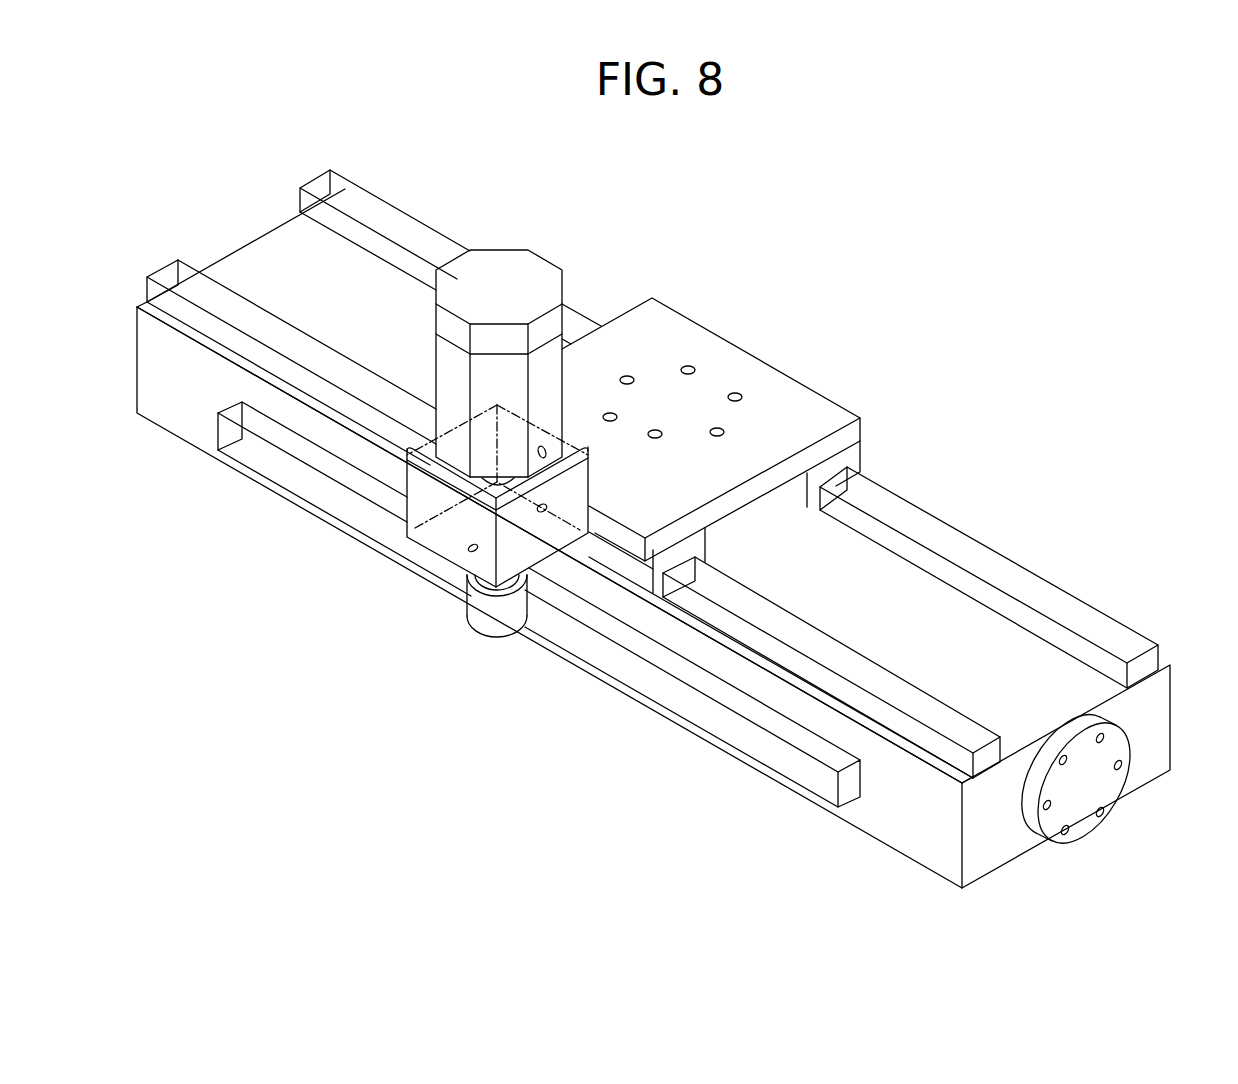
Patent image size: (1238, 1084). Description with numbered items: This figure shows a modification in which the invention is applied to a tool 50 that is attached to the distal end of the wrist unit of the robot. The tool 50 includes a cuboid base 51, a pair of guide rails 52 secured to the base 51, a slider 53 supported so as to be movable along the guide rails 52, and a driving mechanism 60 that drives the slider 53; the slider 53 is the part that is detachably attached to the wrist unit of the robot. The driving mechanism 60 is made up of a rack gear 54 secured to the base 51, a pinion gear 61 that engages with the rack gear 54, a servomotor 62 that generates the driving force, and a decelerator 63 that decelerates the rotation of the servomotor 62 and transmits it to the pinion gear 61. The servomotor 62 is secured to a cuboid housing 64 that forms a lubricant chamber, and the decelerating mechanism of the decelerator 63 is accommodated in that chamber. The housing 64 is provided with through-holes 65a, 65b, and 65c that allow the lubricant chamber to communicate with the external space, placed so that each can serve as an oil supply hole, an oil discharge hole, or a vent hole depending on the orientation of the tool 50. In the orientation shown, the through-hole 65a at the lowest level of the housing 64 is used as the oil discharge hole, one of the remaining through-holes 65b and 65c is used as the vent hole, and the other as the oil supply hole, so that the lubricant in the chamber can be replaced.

The tool 50 is at (1000, 393).
The base 51 is at (1000, 873).
The guide rails 52 is at (905, 700).
The slider 53 is at (750, 357).
The rack gear 54 is at (757, 740).
The driving mechanism 60 is at (490, 240).
The pinion gear 61 is at (487, 642).
The servomotor 62 is at (433, 340).
The decelerator 63 is at (396, 534).
The housing 64 is at (405, 479).
The through-hole 65a is at (467, 556).
The through-hole 65b is at (548, 507).
The through-hole 65c is at (546, 444).